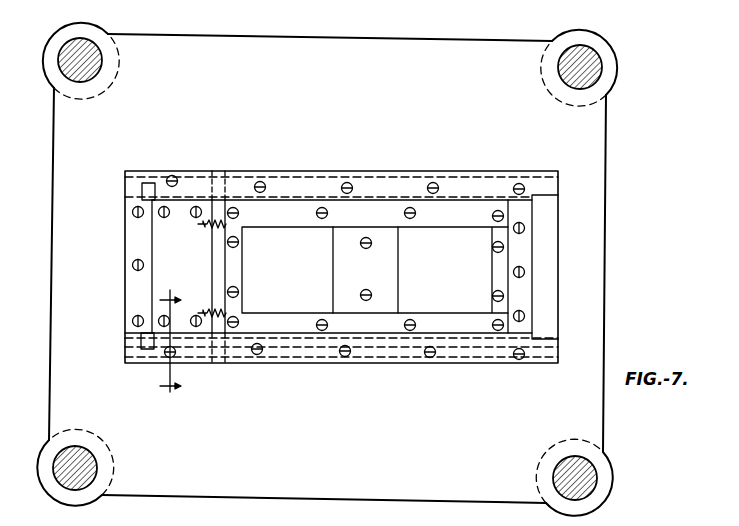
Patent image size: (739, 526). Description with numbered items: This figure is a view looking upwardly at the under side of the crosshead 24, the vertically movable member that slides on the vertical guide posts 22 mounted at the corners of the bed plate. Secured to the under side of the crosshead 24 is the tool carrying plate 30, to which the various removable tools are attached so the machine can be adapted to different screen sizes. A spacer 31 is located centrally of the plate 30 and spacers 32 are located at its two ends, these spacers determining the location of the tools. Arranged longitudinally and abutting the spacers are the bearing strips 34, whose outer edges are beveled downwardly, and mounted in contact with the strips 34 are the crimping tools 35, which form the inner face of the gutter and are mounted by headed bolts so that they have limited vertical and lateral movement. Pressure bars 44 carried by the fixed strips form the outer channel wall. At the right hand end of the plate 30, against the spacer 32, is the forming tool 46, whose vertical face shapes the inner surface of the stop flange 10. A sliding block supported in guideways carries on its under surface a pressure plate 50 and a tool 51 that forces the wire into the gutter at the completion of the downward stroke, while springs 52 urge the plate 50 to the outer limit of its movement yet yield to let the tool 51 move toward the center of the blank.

The stop flange 10 is at (182, 343).
The vertical guide posts 22 is at (97, 68).
The crosshead 24 is at (588, 423).
The tool carrying plate 30 is at (375, 270).
The spacer 31 is at (388, 250).
The spacers 32 is at (241, 283).
The bearing strips 34 is at (460, 212).
The crimping tools 35 is at (322, 183).
The pressure bars 44 is at (282, 178).
The forming tool 46 is at (523, 258).
The pressure plate 50 is at (186, 208).
The tool 51 is at (130, 247).
The springs 52 is at (226, 226).